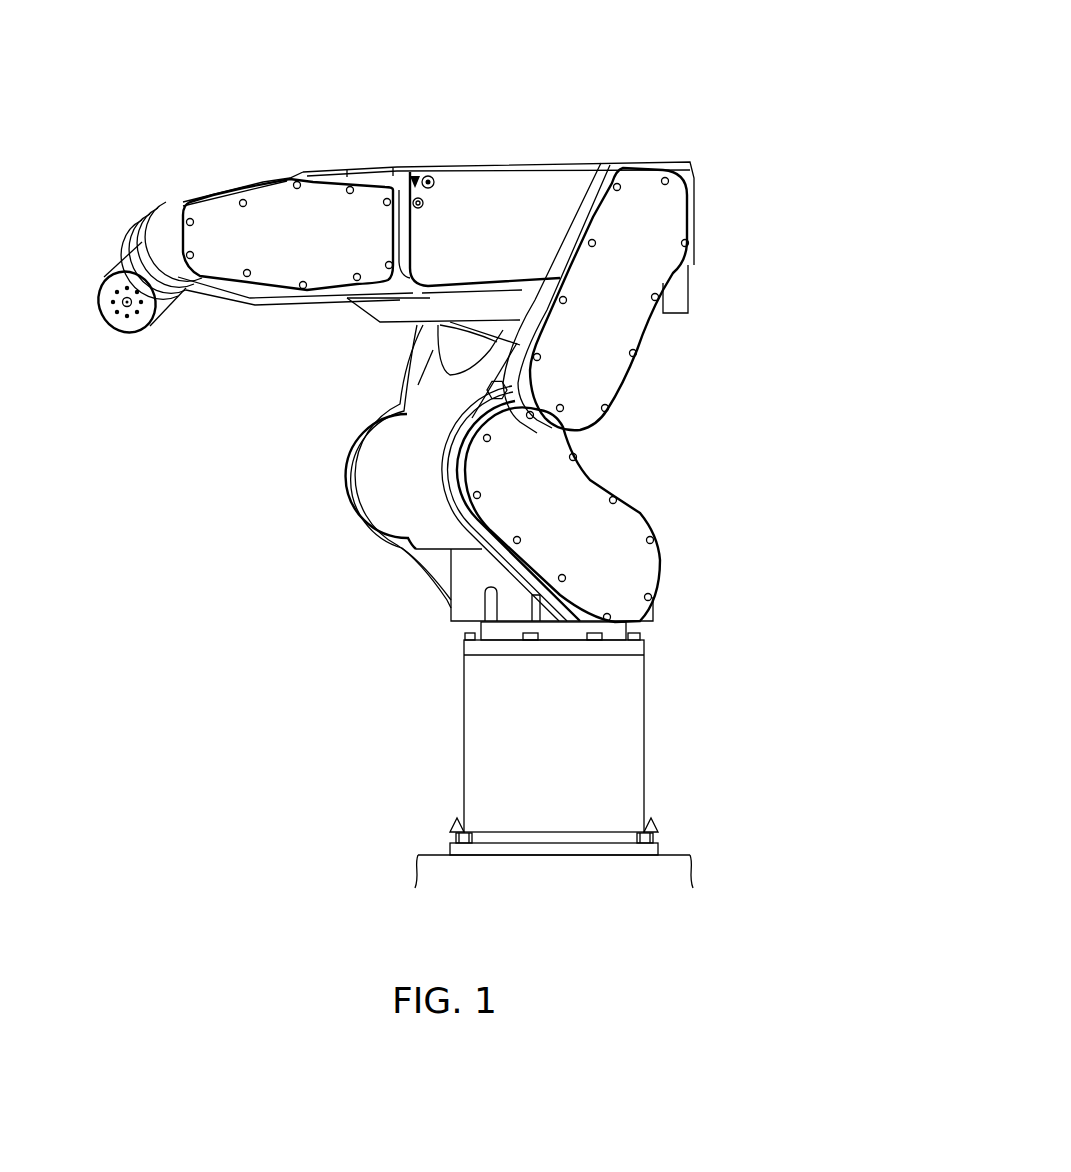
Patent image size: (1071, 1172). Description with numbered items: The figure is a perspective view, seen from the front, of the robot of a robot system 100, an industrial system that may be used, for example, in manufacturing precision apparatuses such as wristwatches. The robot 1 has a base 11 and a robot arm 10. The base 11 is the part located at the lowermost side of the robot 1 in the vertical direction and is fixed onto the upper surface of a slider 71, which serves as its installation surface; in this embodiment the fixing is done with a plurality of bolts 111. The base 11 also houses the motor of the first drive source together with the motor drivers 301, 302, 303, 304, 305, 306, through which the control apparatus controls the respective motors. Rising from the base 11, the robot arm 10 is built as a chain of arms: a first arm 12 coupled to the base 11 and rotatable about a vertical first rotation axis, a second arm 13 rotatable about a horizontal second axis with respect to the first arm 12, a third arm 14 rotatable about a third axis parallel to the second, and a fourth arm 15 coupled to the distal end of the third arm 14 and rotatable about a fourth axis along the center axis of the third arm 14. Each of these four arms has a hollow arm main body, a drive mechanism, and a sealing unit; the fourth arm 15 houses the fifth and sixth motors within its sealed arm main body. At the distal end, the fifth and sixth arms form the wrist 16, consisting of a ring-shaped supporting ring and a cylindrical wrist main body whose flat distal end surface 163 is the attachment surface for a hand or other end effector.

The robot system 100 is at (668, 55).
The robot 1 is at (692, 100).
The robot arm 10 is at (684, 145).
The base 11 is at (648, 735).
The bolts 111 is at (457, 823).
The first arm 12 is at (408, 565).
The second arm 13 is at (404, 357).
The third arm 14 is at (692, 172).
The fourth arm 15 is at (282, 180).
The wrist 16 is at (108, 260).
The distal end surface 163 is at (137, 323).
The motor driver 301 is at (500, 740).
The motor driver 302 is at (398, 704).
The motor driver 303 is at (398, 722).
The motor driver 304 is at (398, 739).
The motor driver 305 is at (398, 756).
The motor driver 306 is at (398, 774).
The slider 71 is at (683, 845).